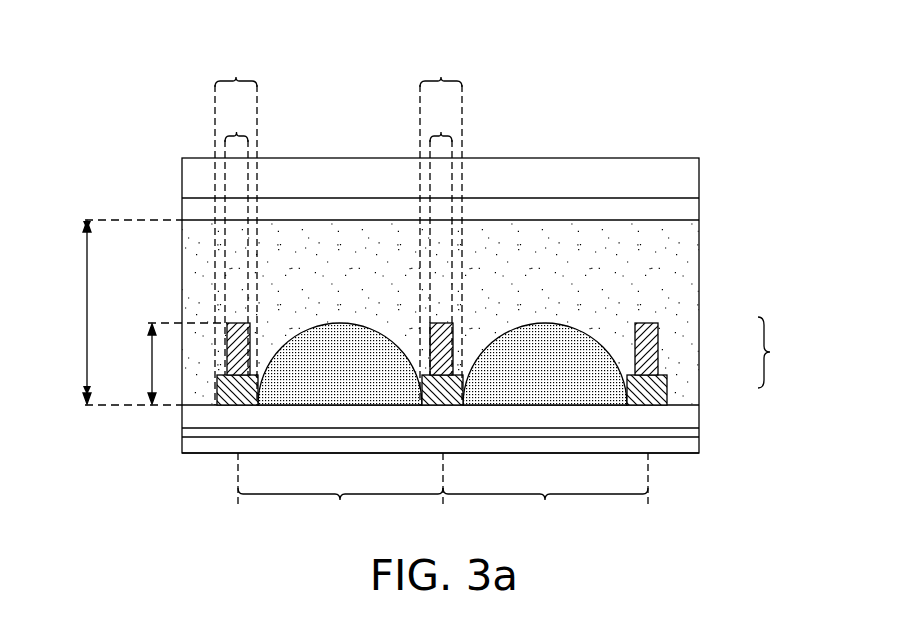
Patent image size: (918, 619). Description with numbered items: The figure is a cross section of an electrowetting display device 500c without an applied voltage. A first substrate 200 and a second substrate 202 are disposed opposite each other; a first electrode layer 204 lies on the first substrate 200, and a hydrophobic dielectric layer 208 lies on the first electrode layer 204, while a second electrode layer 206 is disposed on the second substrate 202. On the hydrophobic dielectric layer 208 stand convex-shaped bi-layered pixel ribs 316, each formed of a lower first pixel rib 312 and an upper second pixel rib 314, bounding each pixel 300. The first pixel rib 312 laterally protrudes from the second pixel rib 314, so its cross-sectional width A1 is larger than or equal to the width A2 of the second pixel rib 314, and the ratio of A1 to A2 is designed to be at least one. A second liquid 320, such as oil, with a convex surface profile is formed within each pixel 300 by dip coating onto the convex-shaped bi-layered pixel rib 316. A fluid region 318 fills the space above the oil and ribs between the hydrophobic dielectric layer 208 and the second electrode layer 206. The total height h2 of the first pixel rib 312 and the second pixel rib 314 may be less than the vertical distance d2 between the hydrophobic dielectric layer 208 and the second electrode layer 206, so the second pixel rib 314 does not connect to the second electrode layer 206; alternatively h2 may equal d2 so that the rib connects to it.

The electrowetting display device 500c is at (134, 168).
The second substrate 202 is at (692, 173).
The second electrode layer 206 is at (692, 205).
The encapsulation / filling layer 318 is at (692, 244).
The second liquid 320 is at (558, 323).
The second pixel rib 314 is at (660, 337).
The first pixel rib 312 is at (667, 384).
The bi-layered pixel rib 316 is at (792, 352).
The hydrophobic dielectric layer 208 is at (190, 418).
The first electrode layer 204 is at (190, 433).
The first substrate 200 is at (190, 452).
The pixel 300 is at (443, 497).
The width of the first pixel rib A1 is at (338, 226).
The width of the second pixel rib A2 is at (339, 238).
The vertical distance d2 is at (116, 312).
The total height h2 is at (171, 363).